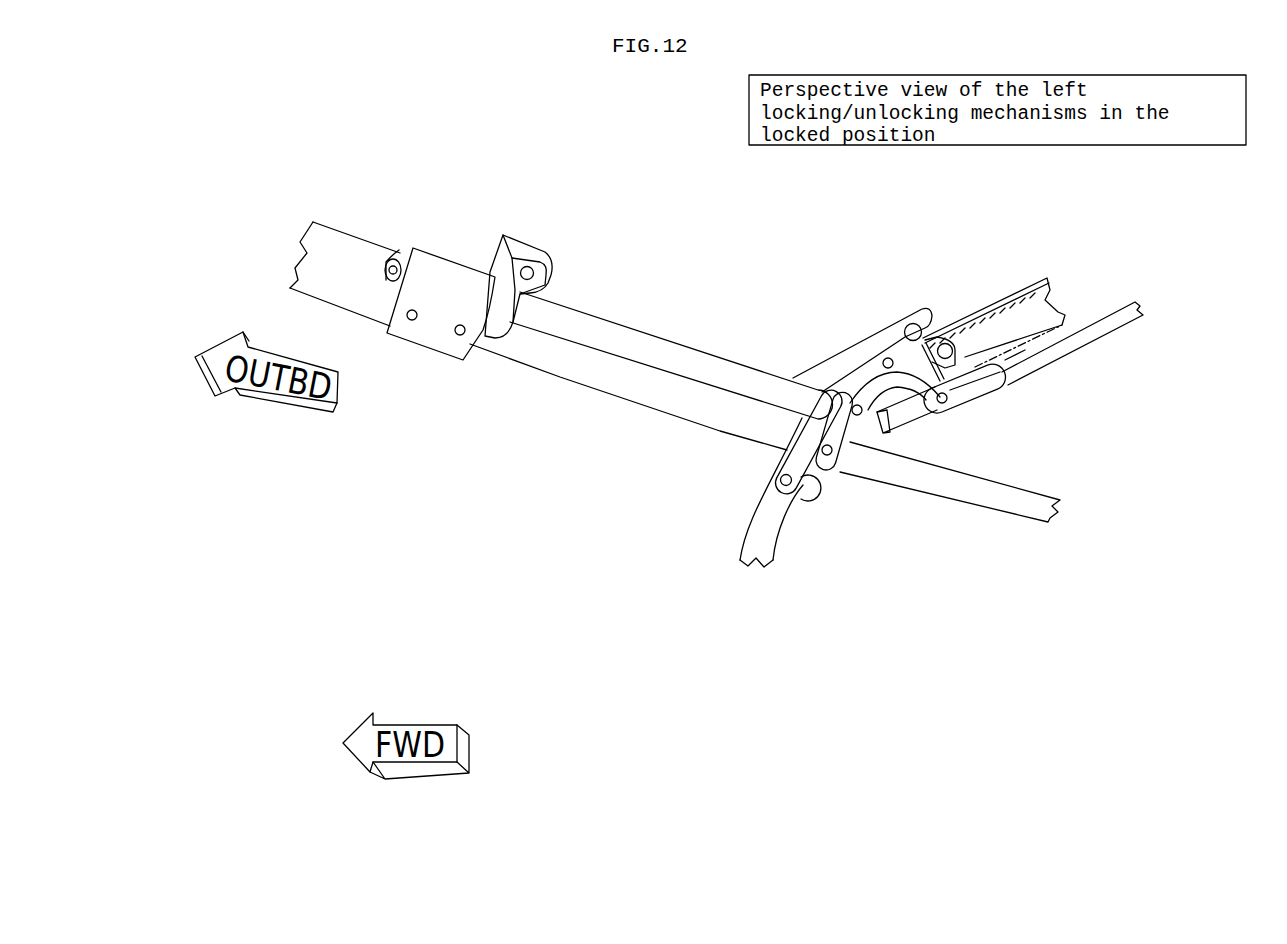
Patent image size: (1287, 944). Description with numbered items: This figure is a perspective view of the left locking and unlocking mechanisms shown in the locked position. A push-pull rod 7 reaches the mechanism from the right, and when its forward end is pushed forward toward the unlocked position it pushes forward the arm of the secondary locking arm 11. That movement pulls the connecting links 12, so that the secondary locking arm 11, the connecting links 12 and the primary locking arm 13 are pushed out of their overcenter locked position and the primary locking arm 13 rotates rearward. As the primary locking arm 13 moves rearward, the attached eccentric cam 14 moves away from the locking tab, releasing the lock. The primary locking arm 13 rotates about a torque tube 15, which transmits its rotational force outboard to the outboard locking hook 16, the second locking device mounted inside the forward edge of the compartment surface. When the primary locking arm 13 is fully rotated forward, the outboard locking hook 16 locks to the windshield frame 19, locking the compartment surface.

The push-pull rod 7 is at (1138, 333).
The secondary locking arm 11 is at (895, 354).
The connecting links 12 is at (843, 432).
The primary locking arm 13 is at (800, 452).
The eccentric cam 14 is at (811, 505).
The torque tube 15 is at (683, 352).
The outboard locking hook 16 is at (432, 338).
The windshield frame 19 is at (603, 370).